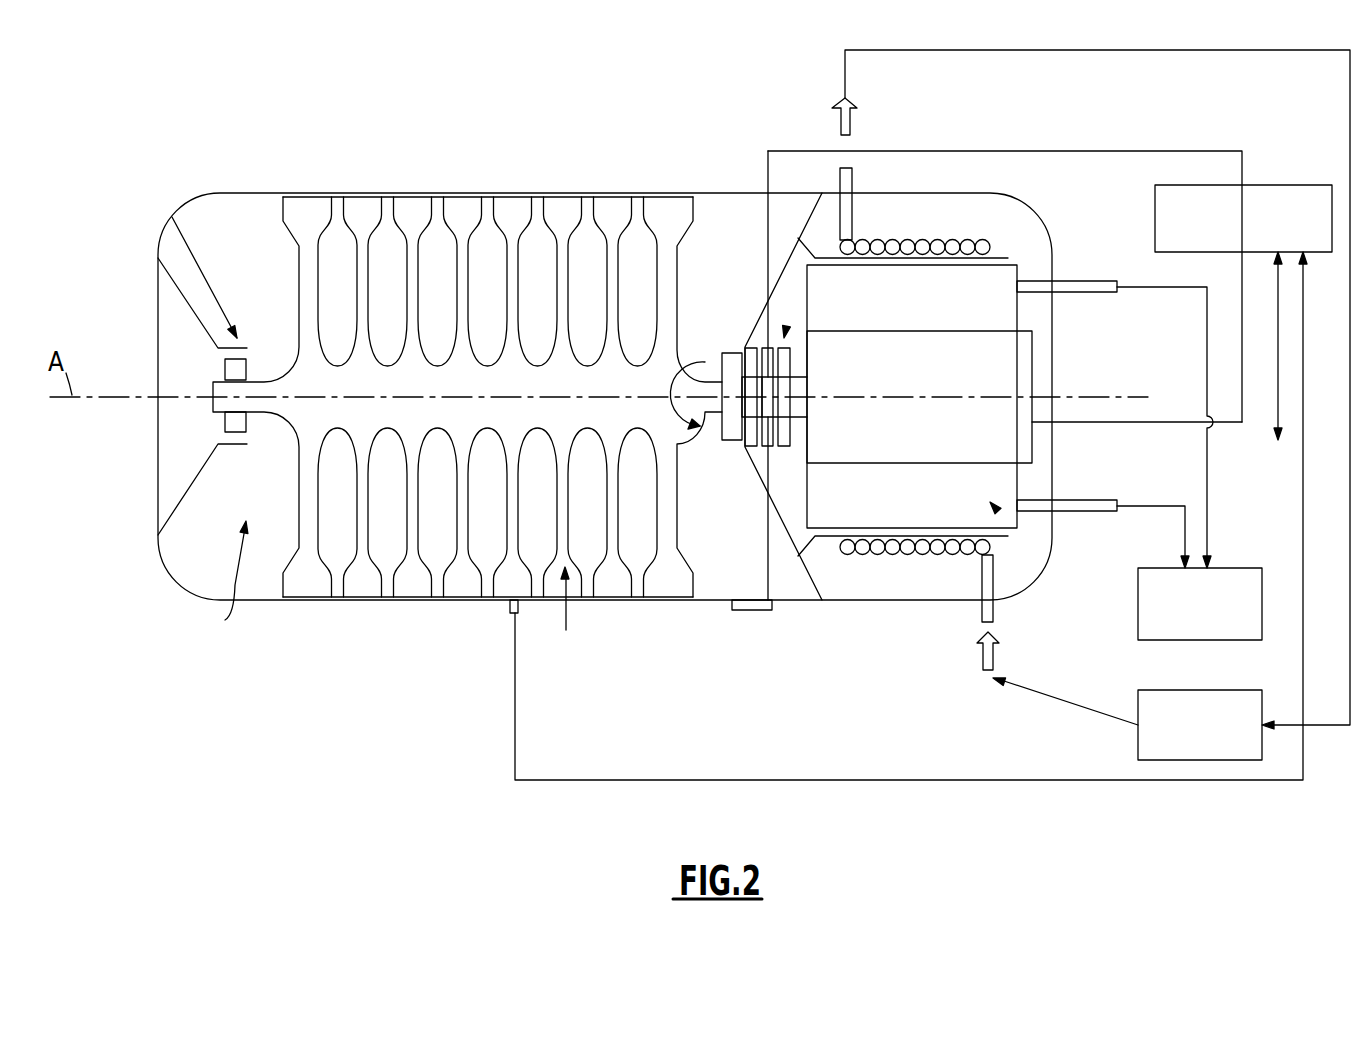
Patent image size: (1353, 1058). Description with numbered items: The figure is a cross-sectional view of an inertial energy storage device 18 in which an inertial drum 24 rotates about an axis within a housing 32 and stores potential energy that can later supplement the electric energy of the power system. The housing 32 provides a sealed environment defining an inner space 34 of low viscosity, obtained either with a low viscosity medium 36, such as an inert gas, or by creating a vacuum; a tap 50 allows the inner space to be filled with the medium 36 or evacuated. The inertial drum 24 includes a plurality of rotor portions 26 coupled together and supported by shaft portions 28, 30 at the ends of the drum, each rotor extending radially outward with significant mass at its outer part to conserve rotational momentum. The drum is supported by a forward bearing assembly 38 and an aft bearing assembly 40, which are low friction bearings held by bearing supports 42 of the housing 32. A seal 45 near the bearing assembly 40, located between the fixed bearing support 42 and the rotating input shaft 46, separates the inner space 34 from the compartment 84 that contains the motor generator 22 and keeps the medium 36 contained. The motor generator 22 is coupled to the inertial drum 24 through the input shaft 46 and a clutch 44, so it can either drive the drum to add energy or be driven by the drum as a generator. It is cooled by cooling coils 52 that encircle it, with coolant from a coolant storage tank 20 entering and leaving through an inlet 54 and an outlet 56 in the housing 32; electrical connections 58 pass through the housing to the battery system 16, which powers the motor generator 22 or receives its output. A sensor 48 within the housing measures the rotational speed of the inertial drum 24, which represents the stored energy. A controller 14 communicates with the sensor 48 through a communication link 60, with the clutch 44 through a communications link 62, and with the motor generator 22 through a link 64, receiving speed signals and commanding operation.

The controller 14 is at (1270, 185).
The battery system 16 is at (1237, 568).
The inertial energy storage device 18 is at (365, 100).
The coolant storage tank 20 is at (1237, 690).
The motor generator 22 is at (996, 508).
The inertial drum 24 is at (566, 630).
The rotor portions 26 is at (413, 240).
The shaft portion 28 is at (250, 402).
The shaft portion 30 is at (725, 400).
The housing 32 is at (385, 600).
The inner space 34 is at (226, 271).
The low viscosity medium 36 is at (225, 620).
The forward bearing assembly 38 is at (172, 217).
The aft bearing assembly 40 is at (730, 372).
The bearing supports 42 is at (198, 462).
The clutch 44 is at (785, 330).
The seal 45 is at (750, 447).
The input shaft 46 is at (750, 390).
The sensor 48 is at (520, 612).
The tap 50 is at (750, 610).
The cooling coils 52 is at (907, 555).
The inlet 54 is at (982, 657).
The outlet 56 is at (850, 125).
The electrical connections 58 is at (1080, 282).
The communication link 60 is at (1128, 780).
The communications link 62 is at (987, 152).
The link 64 is at (1155, 422).
The compartment 84 is at (942, 215).